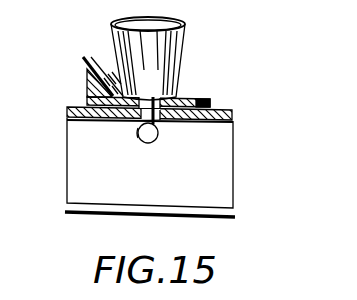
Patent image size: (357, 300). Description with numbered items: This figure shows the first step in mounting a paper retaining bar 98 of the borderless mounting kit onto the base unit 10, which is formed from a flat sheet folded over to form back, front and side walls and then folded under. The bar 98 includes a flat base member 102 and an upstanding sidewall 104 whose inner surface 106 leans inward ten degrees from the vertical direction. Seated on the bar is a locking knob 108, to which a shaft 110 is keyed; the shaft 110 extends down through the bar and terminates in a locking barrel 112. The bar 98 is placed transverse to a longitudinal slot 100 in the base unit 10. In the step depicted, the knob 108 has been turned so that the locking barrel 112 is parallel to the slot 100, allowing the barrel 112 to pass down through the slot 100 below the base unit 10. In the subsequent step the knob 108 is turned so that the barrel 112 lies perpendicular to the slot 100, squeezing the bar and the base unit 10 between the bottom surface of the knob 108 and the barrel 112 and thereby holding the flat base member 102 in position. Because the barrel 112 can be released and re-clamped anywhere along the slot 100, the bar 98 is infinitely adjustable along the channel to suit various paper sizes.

The base unit 10 is at (233, 122).
The paper retaining bar 98 is at (112, 78).
The longitudinal slot 100 is at (137, 129).
The flat base member 102 is at (198, 99).
The upstanding sidewall 104 is at (87, 72).
The inner surface 106 is at (87, 88).
The locking knob 108 is at (185, 38).
The shaft 110 is at (165, 121).
The locking barrel 112 is at (148, 144).